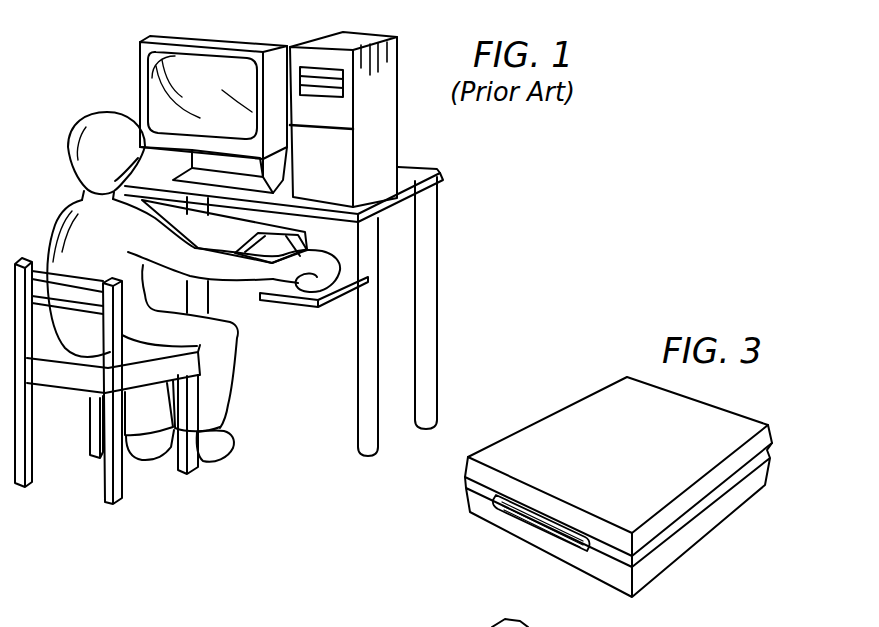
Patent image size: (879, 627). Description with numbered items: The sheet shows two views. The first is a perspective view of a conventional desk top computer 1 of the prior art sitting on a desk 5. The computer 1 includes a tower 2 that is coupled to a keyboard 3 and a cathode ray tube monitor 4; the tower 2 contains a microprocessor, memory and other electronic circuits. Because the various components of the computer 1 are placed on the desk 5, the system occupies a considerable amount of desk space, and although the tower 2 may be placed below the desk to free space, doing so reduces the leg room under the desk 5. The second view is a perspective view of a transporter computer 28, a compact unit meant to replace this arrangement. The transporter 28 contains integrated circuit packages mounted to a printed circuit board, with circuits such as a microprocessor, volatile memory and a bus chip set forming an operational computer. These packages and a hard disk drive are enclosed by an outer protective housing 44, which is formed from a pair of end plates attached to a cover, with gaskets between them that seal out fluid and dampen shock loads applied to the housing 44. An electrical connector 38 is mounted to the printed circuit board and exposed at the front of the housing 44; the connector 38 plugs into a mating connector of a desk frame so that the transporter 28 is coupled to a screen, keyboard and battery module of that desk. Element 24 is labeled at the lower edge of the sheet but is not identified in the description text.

In FIG. 1, the desk top computer 1 is at (450, 128).
In FIG. 1, the tower 2 is at (390, 163).
In FIG. 1, the keyboard 3 is at (323, 246).
In FIG. 1, the cathode ray tube monitor 4 is at (148, 40).
In FIG. 1, the desk 5 is at (384, 197).
In FIG. 3, the transporter computer 28 is at (548, 473).
In FIG. 3, the outer protective housing 44 is at (600, 412).
In FIG. 3, the electrical connector 38 is at (504, 504).
In FIG. 3, the housing 24 is at (447, 623).